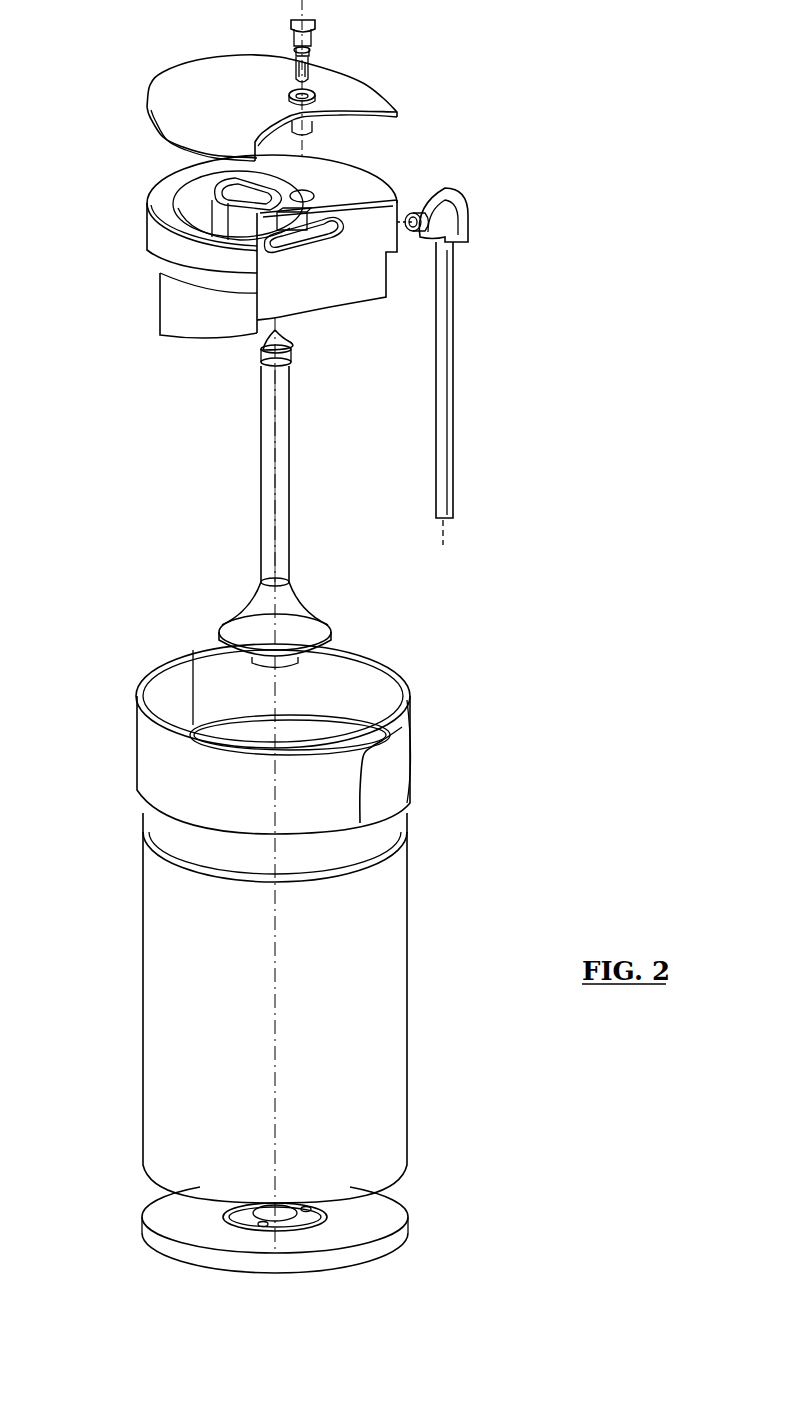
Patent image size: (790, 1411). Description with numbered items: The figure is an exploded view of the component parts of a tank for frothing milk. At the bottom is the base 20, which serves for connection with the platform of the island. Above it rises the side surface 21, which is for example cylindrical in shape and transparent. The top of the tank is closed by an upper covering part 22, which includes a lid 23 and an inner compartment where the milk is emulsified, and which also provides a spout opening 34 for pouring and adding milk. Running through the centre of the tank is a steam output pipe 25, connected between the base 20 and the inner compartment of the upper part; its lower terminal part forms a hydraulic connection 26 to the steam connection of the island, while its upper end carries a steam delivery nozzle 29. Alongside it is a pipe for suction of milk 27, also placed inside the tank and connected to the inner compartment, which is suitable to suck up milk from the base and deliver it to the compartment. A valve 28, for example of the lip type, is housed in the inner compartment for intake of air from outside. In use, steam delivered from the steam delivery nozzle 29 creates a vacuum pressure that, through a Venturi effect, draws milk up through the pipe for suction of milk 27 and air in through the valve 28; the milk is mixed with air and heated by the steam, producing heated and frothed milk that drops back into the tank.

The base 20 is at (180, 1220).
The side surface 21 is at (180, 983).
The upper covering part 22 is at (190, 305).
The lid 23 is at (186, 92).
The steam output pipe 25 is at (270, 462).
The hydraulic connection 26 is at (292, 612).
The pipe for suction of milk 27 is at (440, 346).
The valve 28 is at (311, 57).
The steam delivery nozzle 29 is at (290, 354).
The spout opening 34 is at (393, 732).